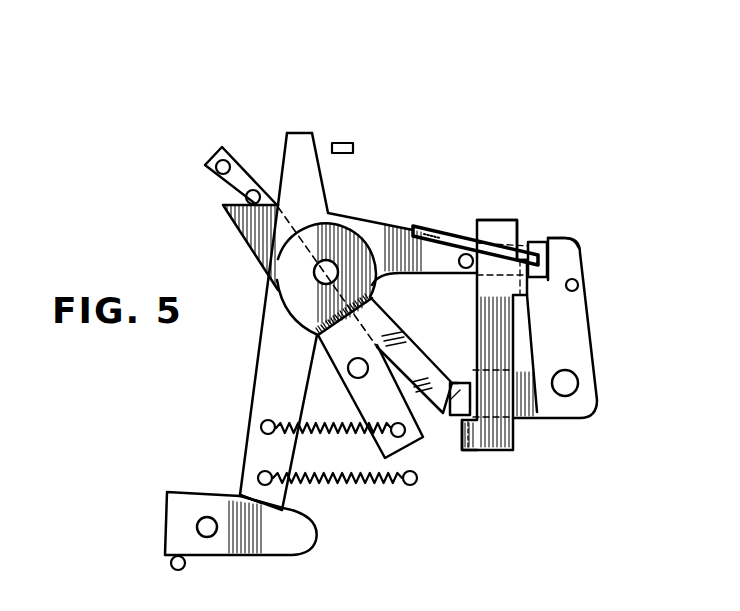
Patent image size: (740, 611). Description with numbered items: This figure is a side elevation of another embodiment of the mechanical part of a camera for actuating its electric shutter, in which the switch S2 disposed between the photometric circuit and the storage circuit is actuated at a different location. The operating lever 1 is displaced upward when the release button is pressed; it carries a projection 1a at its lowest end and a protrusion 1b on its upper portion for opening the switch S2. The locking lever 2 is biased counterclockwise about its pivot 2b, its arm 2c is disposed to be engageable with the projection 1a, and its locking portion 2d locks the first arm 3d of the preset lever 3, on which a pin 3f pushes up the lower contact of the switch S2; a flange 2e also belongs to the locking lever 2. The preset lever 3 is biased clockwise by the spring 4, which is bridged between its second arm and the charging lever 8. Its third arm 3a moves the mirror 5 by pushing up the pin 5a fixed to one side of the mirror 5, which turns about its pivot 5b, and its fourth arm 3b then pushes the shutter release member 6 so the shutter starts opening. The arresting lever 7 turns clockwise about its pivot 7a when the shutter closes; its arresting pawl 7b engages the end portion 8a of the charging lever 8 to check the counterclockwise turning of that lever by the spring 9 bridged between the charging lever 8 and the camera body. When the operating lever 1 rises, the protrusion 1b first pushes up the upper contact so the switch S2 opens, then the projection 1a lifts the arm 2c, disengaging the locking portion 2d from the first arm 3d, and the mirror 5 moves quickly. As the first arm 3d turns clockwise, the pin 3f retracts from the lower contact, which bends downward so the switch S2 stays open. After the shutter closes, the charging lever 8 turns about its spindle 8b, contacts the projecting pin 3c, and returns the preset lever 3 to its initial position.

The operating lever 1 is at (513, 445).
The projection 1a is at (465, 443).
The protrusion 1b is at (532, 240).
The locking lever 2 is at (586, 290).
The pivot 2b is at (580, 384).
The arm 2c is at (457, 388).
The locking portion 2d is at (552, 249).
The plate flange 2e is at (515, 318).
The preset lever 3 is at (370, 222).
The third arm 3a is at (229, 212).
The fourth arm 3b is at (301, 133).
The projecting pin 3c is at (352, 378).
The first arm 3d is at (538, 245).
The pin 3f is at (463, 276).
The spring 4 is at (317, 433).
The mirror 5 is at (393, 300).
The pin 5a is at (257, 189).
The pivot 5b is at (213, 151).
The shutter release member 6 is at (353, 148).
The arresting lever 7 is at (297, 557).
The pivot 7a is at (209, 538).
The arresting pawl 7b is at (284, 509).
The charging lever 8 is at (266, 333).
The end portion 8a is at (243, 499).
The spindle 8b is at (316, 274).
The spring 9 is at (367, 484).
The switch S2 is at (455, 230).